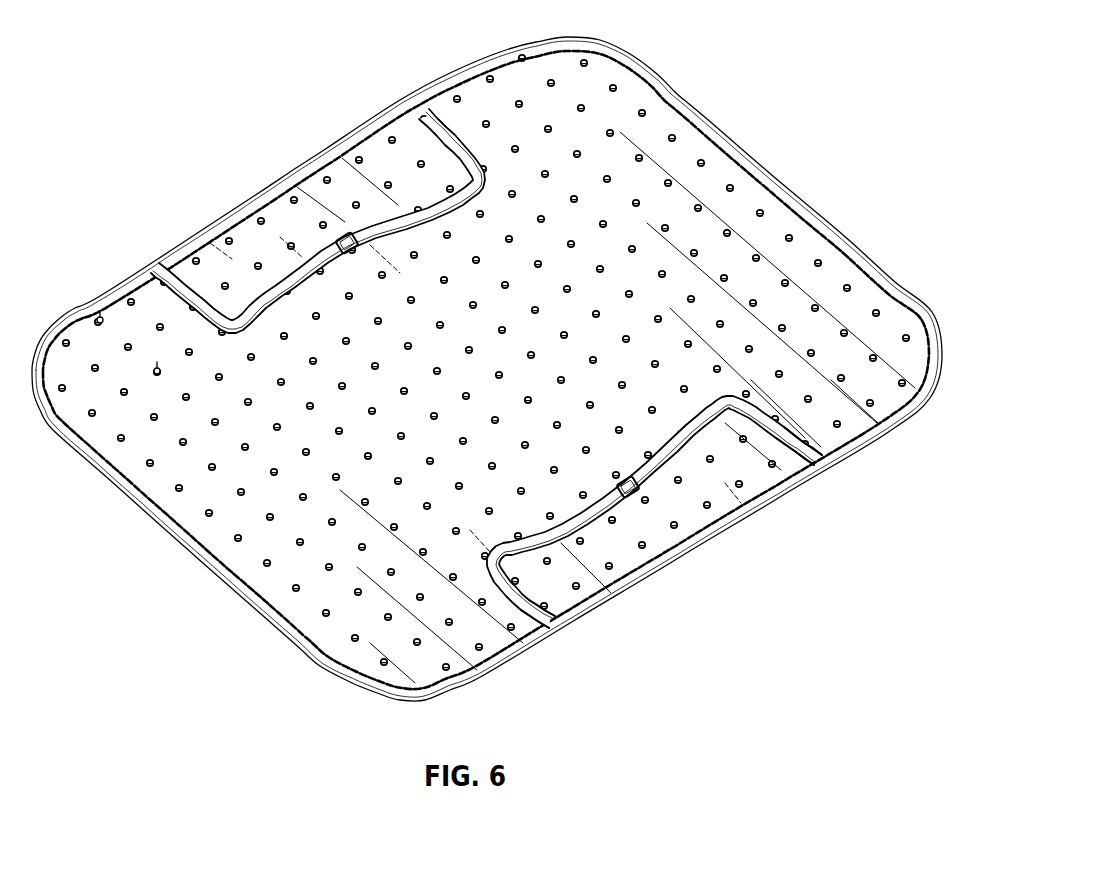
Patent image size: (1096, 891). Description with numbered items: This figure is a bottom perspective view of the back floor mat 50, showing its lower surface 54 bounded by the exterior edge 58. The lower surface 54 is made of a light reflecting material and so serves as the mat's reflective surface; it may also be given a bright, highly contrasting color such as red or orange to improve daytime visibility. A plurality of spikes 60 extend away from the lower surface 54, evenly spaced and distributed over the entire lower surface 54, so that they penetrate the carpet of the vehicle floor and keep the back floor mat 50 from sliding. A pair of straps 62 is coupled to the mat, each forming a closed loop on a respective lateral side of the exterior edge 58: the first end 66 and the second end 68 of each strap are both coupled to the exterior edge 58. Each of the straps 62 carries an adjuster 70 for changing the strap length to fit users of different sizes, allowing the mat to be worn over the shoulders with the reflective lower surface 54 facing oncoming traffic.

The back floor mat 50 is at (694, 50).
The lower surface 54 is at (277, 582).
The exterior edge 58 is at (912, 286).
The spikes 60 is at (258, 262).
The straps 62 is at (428, 116).
The first end 66 is at (577, 621).
The second end 68 is at (822, 463).
The adjuster 70 is at (641, 492).